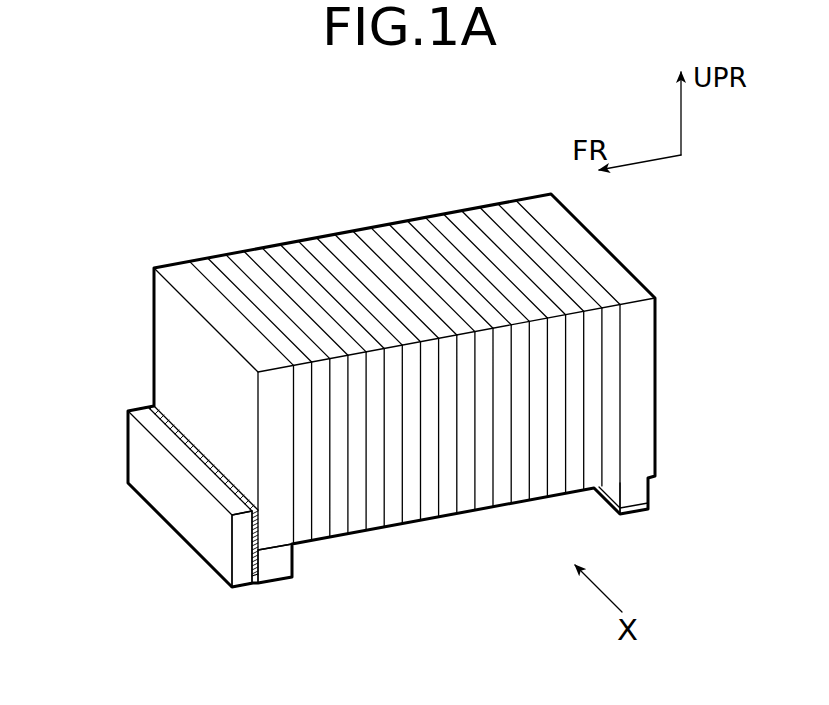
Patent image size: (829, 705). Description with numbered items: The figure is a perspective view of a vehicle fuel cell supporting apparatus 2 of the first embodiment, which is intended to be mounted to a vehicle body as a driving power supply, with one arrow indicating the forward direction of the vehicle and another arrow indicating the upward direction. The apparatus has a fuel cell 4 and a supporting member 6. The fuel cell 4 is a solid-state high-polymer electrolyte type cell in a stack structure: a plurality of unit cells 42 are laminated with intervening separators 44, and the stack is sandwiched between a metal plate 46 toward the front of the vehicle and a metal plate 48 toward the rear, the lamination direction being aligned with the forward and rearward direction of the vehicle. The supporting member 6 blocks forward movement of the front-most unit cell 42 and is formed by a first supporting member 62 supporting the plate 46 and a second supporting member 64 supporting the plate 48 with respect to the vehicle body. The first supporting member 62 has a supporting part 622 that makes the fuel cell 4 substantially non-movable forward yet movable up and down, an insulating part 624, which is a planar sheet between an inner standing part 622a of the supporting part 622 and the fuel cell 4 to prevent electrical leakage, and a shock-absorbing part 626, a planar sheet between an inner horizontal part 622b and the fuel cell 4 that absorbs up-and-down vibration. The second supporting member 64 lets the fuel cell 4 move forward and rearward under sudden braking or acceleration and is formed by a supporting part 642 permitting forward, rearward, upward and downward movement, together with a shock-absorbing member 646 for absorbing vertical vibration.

The vehicle fuel cell supporting apparatus 2 is at (190, 219).
The fuel cell 4 is at (488, 200).
The unit cell 42 is at (335, 243).
The separator 44 is at (355, 535).
The metal plate 46 is at (176, 263).
The metal plate 48 is at (560, 220).
The supporting member 6 is at (503, 630).
The first supporting member 62 is at (286, 585).
The second supporting member 64 is at (603, 506).
The supporting part 622 is at (147, 463).
The inner standing part 622a is at (252, 535).
The inner horizontal part 622b is at (267, 583).
The insulating part 624 is at (182, 432).
The shock-absorbing part 626 is at (237, 588).
The supporting part 642 is at (642, 512).
The shock-absorbing member 646 is at (642, 492).